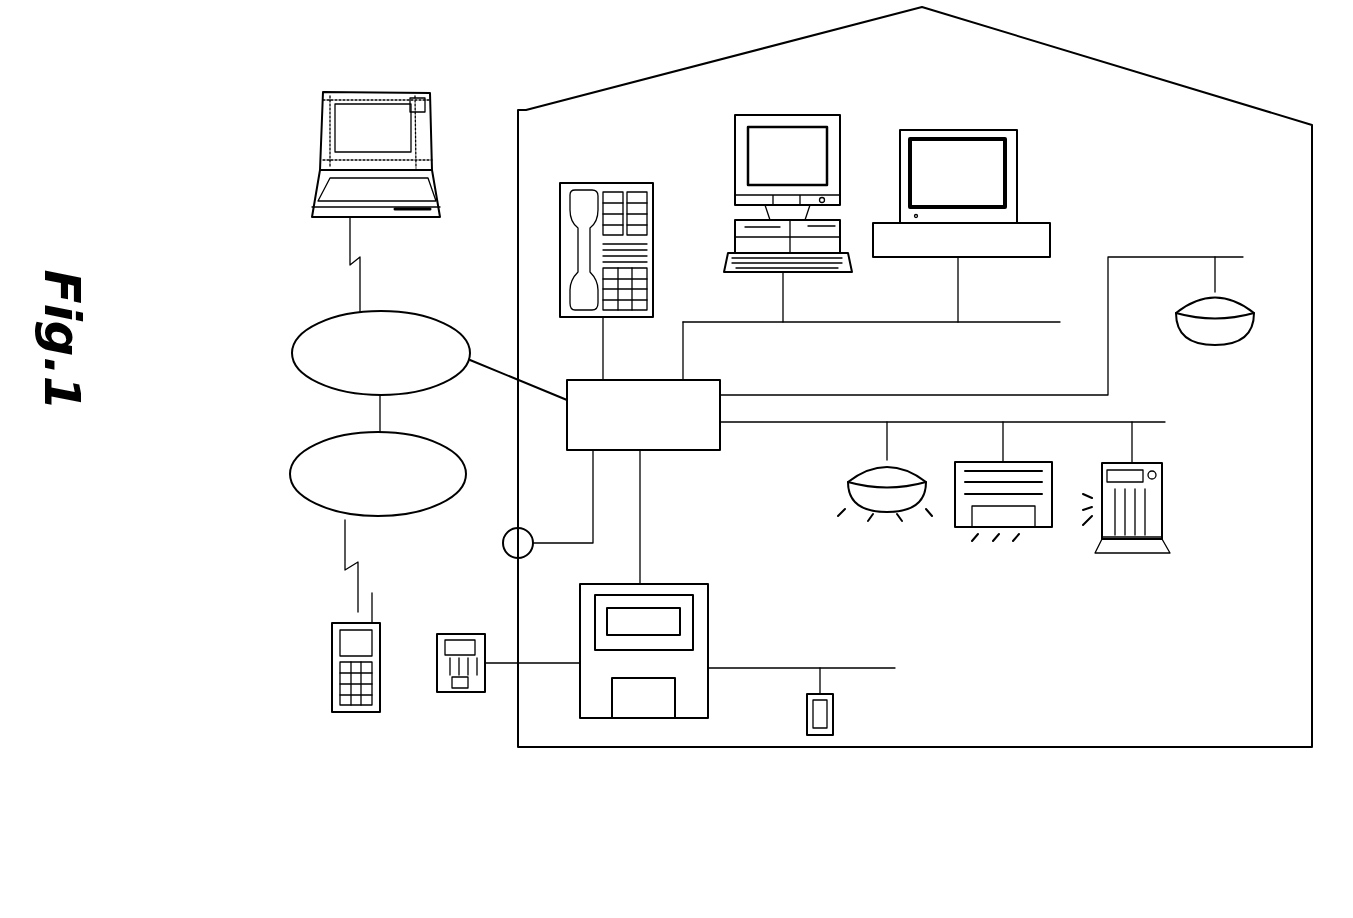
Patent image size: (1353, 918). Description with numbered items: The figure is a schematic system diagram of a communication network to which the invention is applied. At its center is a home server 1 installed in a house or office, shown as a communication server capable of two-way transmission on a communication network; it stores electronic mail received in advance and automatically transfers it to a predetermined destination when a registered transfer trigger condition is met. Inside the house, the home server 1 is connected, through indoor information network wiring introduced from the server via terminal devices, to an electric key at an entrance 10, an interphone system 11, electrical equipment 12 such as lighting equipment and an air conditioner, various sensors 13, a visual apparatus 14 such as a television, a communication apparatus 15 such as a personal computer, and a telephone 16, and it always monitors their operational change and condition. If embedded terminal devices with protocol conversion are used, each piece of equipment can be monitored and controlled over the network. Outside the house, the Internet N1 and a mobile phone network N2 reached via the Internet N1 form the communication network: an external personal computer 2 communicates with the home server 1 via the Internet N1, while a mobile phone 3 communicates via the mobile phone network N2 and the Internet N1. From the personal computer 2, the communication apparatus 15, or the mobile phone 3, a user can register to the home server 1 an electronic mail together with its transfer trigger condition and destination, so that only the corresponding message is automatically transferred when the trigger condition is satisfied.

The home server 1 is at (700, 445).
The personal computer 2 is at (428, 112).
The mobile phone 3 is at (333, 675).
The electric key at an entrance 10 is at (503, 543).
The interphone system 11 is at (708, 605).
The electrical equipment 12 is at (1040, 548).
The sensors 13 is at (1185, 333).
The visual apparatus 14 is at (925, 128).
The communication apparatus 15 is at (806, 114).
The telephone 16 is at (616, 178).
The Internet N1 is at (452, 343).
The mobile phone network N2 is at (452, 470).